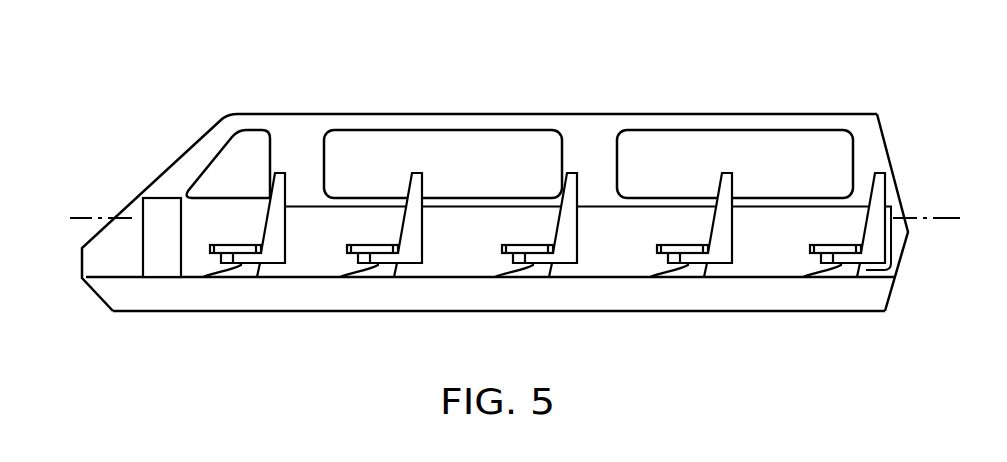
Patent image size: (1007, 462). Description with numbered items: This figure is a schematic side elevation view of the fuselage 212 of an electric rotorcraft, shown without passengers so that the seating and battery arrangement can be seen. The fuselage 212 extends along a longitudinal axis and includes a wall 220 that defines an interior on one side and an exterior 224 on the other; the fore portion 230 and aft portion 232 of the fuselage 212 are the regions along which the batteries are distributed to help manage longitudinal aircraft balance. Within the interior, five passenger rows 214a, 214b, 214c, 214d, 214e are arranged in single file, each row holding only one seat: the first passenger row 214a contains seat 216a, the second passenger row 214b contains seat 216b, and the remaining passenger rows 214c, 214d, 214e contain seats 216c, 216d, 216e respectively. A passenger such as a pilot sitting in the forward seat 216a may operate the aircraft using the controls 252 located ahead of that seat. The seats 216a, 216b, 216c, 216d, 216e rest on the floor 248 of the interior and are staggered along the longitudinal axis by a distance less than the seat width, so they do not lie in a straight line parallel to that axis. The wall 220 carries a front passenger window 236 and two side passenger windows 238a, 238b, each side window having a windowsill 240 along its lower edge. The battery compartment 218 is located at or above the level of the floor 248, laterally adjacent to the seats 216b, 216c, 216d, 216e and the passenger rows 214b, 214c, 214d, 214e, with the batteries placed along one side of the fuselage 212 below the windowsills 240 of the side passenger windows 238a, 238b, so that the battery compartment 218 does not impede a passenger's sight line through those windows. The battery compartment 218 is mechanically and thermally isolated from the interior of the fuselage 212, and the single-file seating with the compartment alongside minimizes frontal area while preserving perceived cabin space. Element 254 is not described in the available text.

The fuselage 212 is at (299, 84).
The passenger row 214a is at (245, 297).
The passenger row 214b is at (380, 297).
The passenger row 214c is at (535, 297).
The passenger row 214d is at (690, 297).
The passenger row 214e is at (845, 297).
The seat 216a is at (232, 247).
The seat 216b is at (375, 245).
The seat 216c is at (522, 247).
The seat 216d is at (677, 247).
The seat 216e is at (830, 247).
The battery compartment 218 is at (592, 181).
The wall 220 is at (820, 106).
The exterior 224 is at (363, 113).
The fore portion 230 is at (110, 262).
The aft portion 232 is at (886, 148).
The front passenger window 236 is at (252, 152).
The side passenger window 238a is at (472, 138).
The side passenger window 238b is at (738, 140).
The windowsill 240 is at (498, 198).
The floor 248 is at (307, 277).
The controls 252 is at (162, 198).
The side wall rail 254 is at (465, 206).